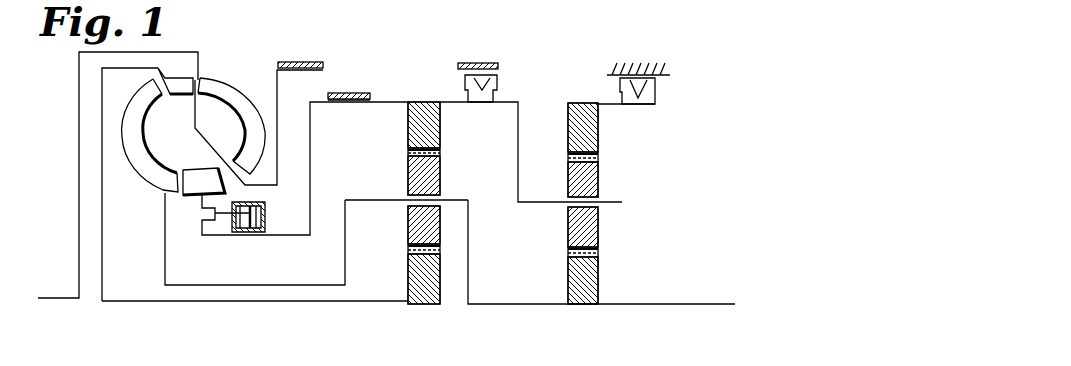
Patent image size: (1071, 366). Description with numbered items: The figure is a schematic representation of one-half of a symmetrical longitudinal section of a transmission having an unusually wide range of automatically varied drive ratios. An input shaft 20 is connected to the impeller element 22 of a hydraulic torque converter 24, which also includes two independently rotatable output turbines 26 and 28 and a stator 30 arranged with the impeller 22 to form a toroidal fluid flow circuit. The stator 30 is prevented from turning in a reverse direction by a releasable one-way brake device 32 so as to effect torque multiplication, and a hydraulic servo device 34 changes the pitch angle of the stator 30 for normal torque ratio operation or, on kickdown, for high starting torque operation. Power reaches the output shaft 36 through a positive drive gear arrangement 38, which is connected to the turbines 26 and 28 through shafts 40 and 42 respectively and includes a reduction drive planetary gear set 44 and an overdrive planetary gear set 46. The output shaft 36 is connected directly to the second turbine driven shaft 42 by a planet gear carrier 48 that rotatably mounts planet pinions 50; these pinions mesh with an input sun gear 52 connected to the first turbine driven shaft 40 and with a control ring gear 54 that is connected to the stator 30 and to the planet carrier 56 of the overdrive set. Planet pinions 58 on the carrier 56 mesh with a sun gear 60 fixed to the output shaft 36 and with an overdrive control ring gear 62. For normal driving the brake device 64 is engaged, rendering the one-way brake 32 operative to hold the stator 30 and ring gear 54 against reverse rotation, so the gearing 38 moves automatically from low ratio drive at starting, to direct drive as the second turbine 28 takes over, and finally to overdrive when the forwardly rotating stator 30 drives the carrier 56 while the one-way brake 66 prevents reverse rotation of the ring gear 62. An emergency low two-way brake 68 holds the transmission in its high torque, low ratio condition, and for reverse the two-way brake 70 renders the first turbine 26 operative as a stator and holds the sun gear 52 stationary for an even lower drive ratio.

The input shaft 20 is at (60, 302).
The impeller element 22 is at (240, 96).
The hydraulic torque converter 24 is at (212, 78).
The output turbine 26 is at (174, 78).
The output turbine 28 is at (147, 187).
The stator 30 is at (192, 175).
The releasable one-way brake device 32 is at (505, 93).
The hydraulic servo device 34 is at (267, 217).
The output shaft 36 is at (673, 305).
The positive drive gear arrangement 38 is at (503, 304).
The shaft 40 is at (208, 302).
The shaft 42 is at (262, 282).
The reduction drive planetary gear set 44 is at (419, 182).
The overdrive planetary gear set 46 is at (605, 176).
The planet gear carrier 48 is at (370, 200).
The planet pinions 50 is at (440, 174).
The input sun gear 52 is at (408, 272).
The control ring gear 54 is at (410, 123).
The planet carrier 56 is at (545, 188).
The planet pinions 58 is at (598, 196).
The sun gear 60 is at (598, 283).
The overdrive control ring gear 62 is at (592, 132).
The brake device 64 is at (488, 63).
The one-way brake 66 is at (674, 85).
The emergency low two-way brake 68 is at (358, 93).
The two-way brake 70 is at (318, 63).